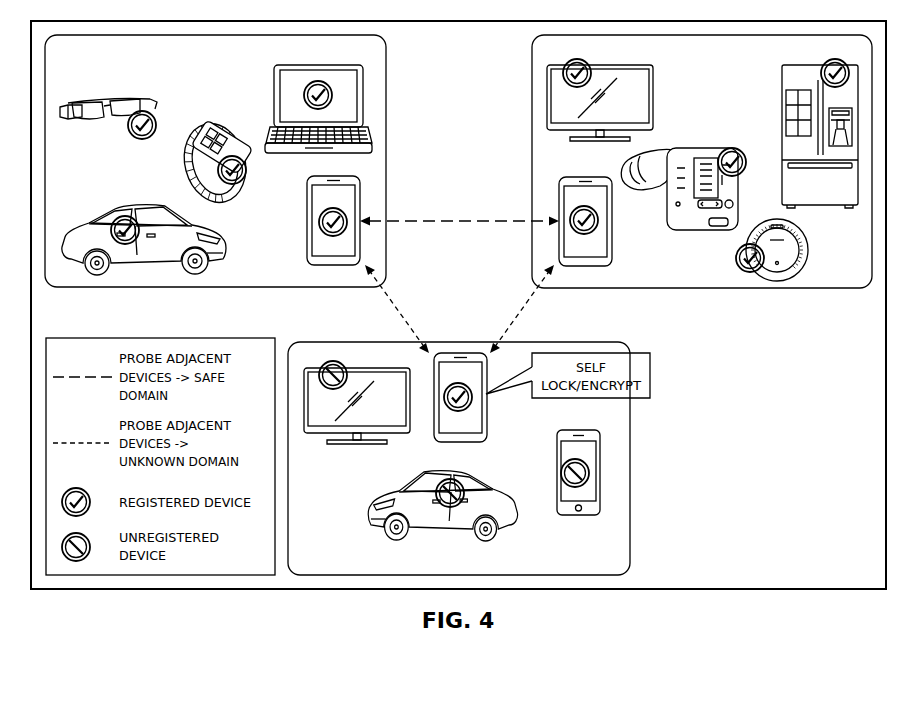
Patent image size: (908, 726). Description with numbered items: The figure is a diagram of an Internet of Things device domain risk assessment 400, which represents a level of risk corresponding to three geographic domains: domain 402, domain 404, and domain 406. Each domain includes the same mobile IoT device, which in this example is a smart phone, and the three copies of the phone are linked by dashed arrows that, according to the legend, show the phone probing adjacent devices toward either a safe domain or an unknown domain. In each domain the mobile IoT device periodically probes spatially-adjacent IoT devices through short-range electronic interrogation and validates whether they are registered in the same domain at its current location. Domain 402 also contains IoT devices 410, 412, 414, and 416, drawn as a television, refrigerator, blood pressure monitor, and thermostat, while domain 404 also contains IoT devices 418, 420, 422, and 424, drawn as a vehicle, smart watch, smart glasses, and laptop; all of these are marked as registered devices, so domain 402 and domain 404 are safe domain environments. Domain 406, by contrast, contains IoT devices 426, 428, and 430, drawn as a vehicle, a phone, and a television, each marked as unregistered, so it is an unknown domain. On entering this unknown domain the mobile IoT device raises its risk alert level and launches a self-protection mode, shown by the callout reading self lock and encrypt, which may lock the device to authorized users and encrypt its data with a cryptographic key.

The Internet of Things device domain risk assessment 400 is at (747, 474).
The domain 402 is at (532, 115).
The domain 404 is at (386, 115).
The domain 406 is at (630, 508).
The IoT device 410 is at (654, 100).
The IoT device 412 is at (781, 128).
The IoT device 414 is at (700, 232).
The IoT device 416 is at (809, 252).
The IoT device 418 is at (126, 197).
The IoT device 420 is at (196, 130).
The IoT device 422 is at (103, 92).
The IoT device 424 is at (273, 100).
The IoT device 426 is at (368, 515).
The IoT device 428 is at (580, 516).
The IoT device 430 is at (355, 444).